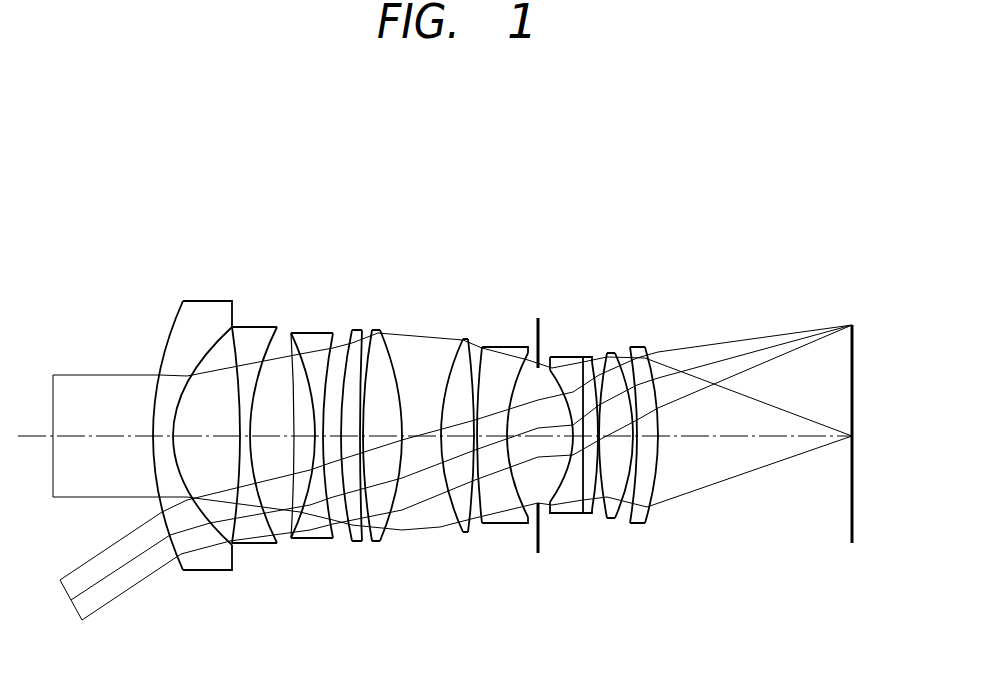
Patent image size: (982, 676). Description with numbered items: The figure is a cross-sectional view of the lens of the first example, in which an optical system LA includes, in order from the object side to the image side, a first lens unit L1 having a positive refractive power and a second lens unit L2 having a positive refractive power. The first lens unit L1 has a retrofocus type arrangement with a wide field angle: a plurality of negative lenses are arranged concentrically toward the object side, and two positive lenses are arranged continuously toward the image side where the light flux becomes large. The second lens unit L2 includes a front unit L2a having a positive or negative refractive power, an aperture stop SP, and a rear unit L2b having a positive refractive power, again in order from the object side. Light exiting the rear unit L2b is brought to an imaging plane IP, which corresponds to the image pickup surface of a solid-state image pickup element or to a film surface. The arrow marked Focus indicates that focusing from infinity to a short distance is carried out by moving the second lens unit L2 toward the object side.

The optical system LA is at (652, 168).
The first lens unit L1 is at (403, 278).
The second lens unit L2 is at (654, 260).
The front unit L2a is at (527, 320).
The rear unit L2b is at (654, 320).
The aperture stop SP is at (556, 546).
The imaging plane IP is at (846, 317).
The focusing movement of second lens unit Focus is at (655, 583).